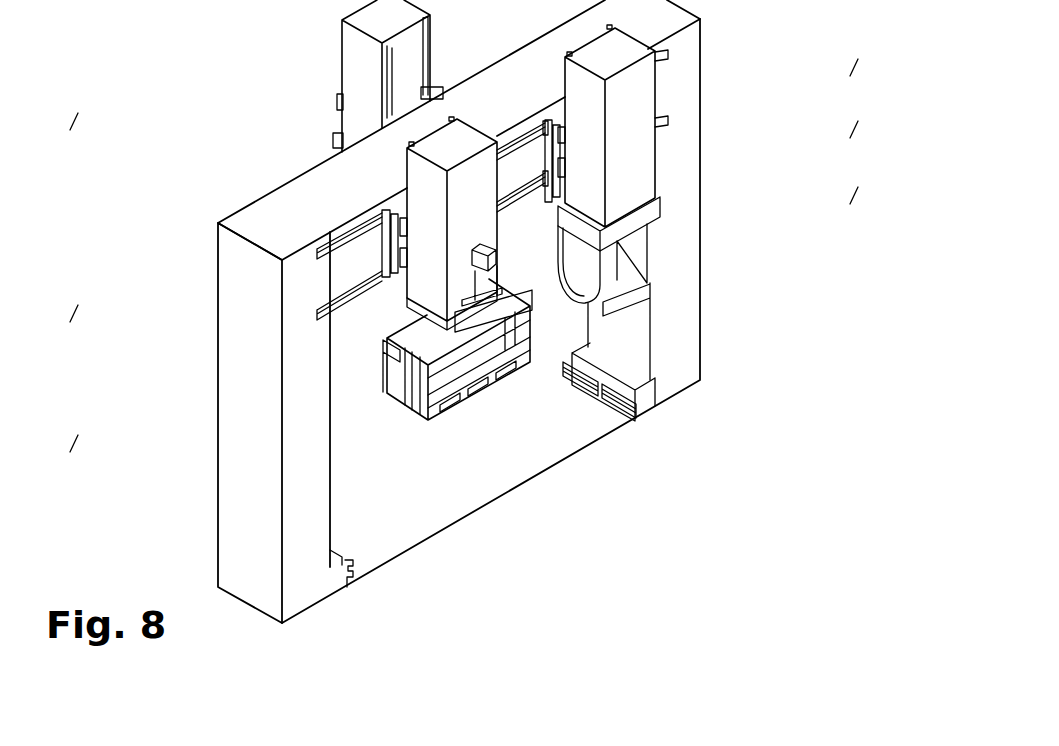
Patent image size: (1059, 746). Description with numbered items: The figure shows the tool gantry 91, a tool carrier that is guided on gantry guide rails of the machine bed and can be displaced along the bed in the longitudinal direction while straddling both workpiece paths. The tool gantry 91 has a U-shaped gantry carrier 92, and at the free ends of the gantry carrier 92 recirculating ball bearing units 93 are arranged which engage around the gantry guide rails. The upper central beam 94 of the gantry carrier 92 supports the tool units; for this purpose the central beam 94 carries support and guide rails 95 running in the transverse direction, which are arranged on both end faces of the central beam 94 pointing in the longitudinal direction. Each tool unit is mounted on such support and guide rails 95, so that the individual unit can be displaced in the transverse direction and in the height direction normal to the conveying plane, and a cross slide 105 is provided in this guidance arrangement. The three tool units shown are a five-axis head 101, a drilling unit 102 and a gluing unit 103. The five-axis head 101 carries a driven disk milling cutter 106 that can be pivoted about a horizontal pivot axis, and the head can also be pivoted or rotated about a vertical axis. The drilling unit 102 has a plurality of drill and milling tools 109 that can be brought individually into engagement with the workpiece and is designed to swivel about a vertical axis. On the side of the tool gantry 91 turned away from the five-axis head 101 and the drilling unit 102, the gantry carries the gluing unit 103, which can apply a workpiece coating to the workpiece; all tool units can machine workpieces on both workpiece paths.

The tool gantry 91 is at (380, 311).
The gantry carrier 92 is at (240, 510).
The recirculating ball bearing units 93 is at (636, 380).
The central beam 94 is at (343, 175).
The support and guide rails 95 is at (317, 248).
The 5-axis head 101 is at (637, 77).
The drilling unit 102 is at (427, 255).
The gluing unit 103 is at (355, 70).
The cross slide 105 is at (553, 151).
The disk milling cutter 106 is at (620, 312).
The drill and milling tools 109 is at (392, 388).